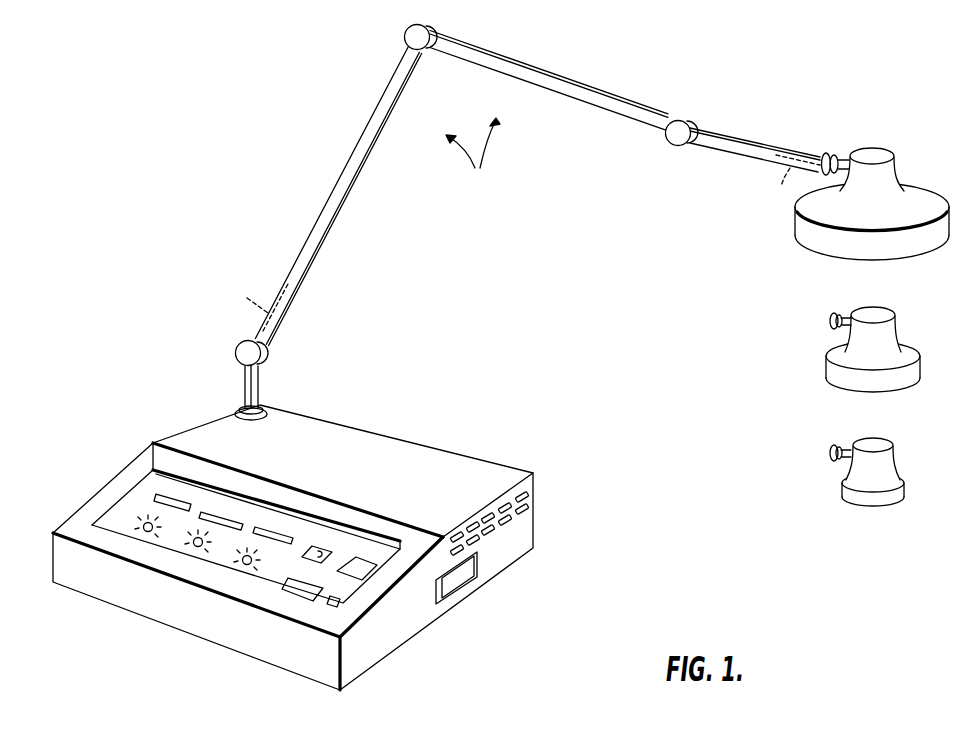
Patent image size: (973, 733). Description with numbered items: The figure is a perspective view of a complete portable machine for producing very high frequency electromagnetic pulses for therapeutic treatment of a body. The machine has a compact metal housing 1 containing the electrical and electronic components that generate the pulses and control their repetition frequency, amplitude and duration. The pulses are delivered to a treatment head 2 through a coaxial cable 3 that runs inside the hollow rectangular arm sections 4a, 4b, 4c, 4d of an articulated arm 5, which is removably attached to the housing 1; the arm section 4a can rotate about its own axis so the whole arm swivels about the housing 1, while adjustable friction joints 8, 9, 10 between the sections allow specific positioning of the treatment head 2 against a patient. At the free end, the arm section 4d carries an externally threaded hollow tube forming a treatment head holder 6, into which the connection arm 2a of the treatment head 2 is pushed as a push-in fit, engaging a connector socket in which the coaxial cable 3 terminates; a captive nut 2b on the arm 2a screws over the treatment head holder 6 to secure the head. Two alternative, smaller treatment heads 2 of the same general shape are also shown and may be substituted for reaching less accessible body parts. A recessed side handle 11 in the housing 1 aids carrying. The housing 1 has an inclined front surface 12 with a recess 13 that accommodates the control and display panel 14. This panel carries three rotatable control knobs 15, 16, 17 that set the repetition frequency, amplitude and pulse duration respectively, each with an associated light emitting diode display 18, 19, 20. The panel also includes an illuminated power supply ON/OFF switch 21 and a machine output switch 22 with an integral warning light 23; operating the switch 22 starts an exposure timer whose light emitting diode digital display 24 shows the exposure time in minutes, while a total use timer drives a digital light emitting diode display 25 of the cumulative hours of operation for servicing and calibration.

The housing 1 is at (480, 463).
The treatment head 2 is at (823, 247).
The arm 2a is at (840, 160).
The captive nut 2b is at (827, 156).
The coaxial cable 3 is at (525, 243).
The arm section 4a is at (256, 380).
The arm section 4b is at (337, 218).
The arm section 4c is at (537, 82).
The arm section 4d is at (717, 145).
The articulated arm 5 is at (473, 156).
The treatment head holder 6 is at (825, 157).
The adjustable friction joint 8 is at (237, 352).
The adjustable friction joint 9 is at (405, 36).
The adjustable friction joint 10 is at (683, 117).
The handle 11 is at (465, 578).
The inclined front surface 12 is at (83, 512).
The recess 13 is at (138, 490).
The control and display panel 14 is at (270, 573).
The control knob 15 is at (143, 528).
The control knob 16 is at (190, 547).
The control knob 17 is at (233, 563).
The light emitting diode display 18 is at (180, 500).
The light emitting diode display 19 is at (228, 515).
The light emitting diode display 20 is at (280, 528).
The ON/OFF switch 21 is at (333, 600).
The machine output switch 22 is at (318, 546).
The warning light 23 is at (320, 550).
The light emitting diode digital display 24 is at (363, 568).
The digital light emitting diode display 25 is at (298, 586).